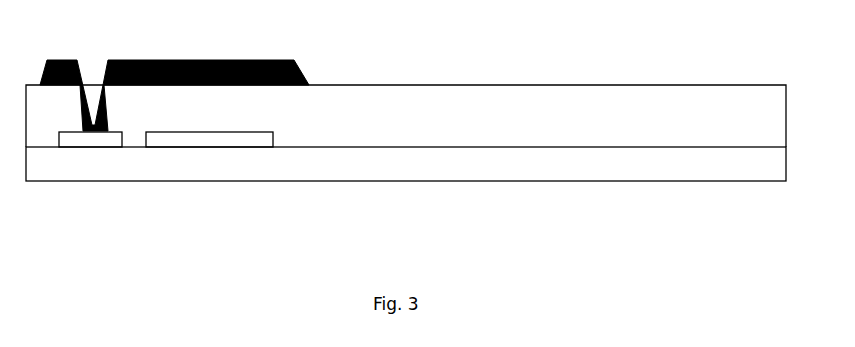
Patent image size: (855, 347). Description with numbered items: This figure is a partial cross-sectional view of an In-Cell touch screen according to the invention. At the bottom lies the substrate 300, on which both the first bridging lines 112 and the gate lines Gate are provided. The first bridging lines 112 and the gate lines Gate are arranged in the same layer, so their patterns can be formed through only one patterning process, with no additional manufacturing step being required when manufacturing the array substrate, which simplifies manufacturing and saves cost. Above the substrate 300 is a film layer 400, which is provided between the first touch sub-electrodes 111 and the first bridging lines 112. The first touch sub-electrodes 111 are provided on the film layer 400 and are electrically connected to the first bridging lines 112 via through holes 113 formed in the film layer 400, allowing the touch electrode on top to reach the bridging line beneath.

The first touch sub-electrode 111 is at (194, 69).
The first bridging line 112 is at (114, 185).
The through hole 113 is at (93, 82).
The substrate 300 is at (406, 188).
The film layer 400 is at (406, 94).
The gate line Gate is at (214, 137).